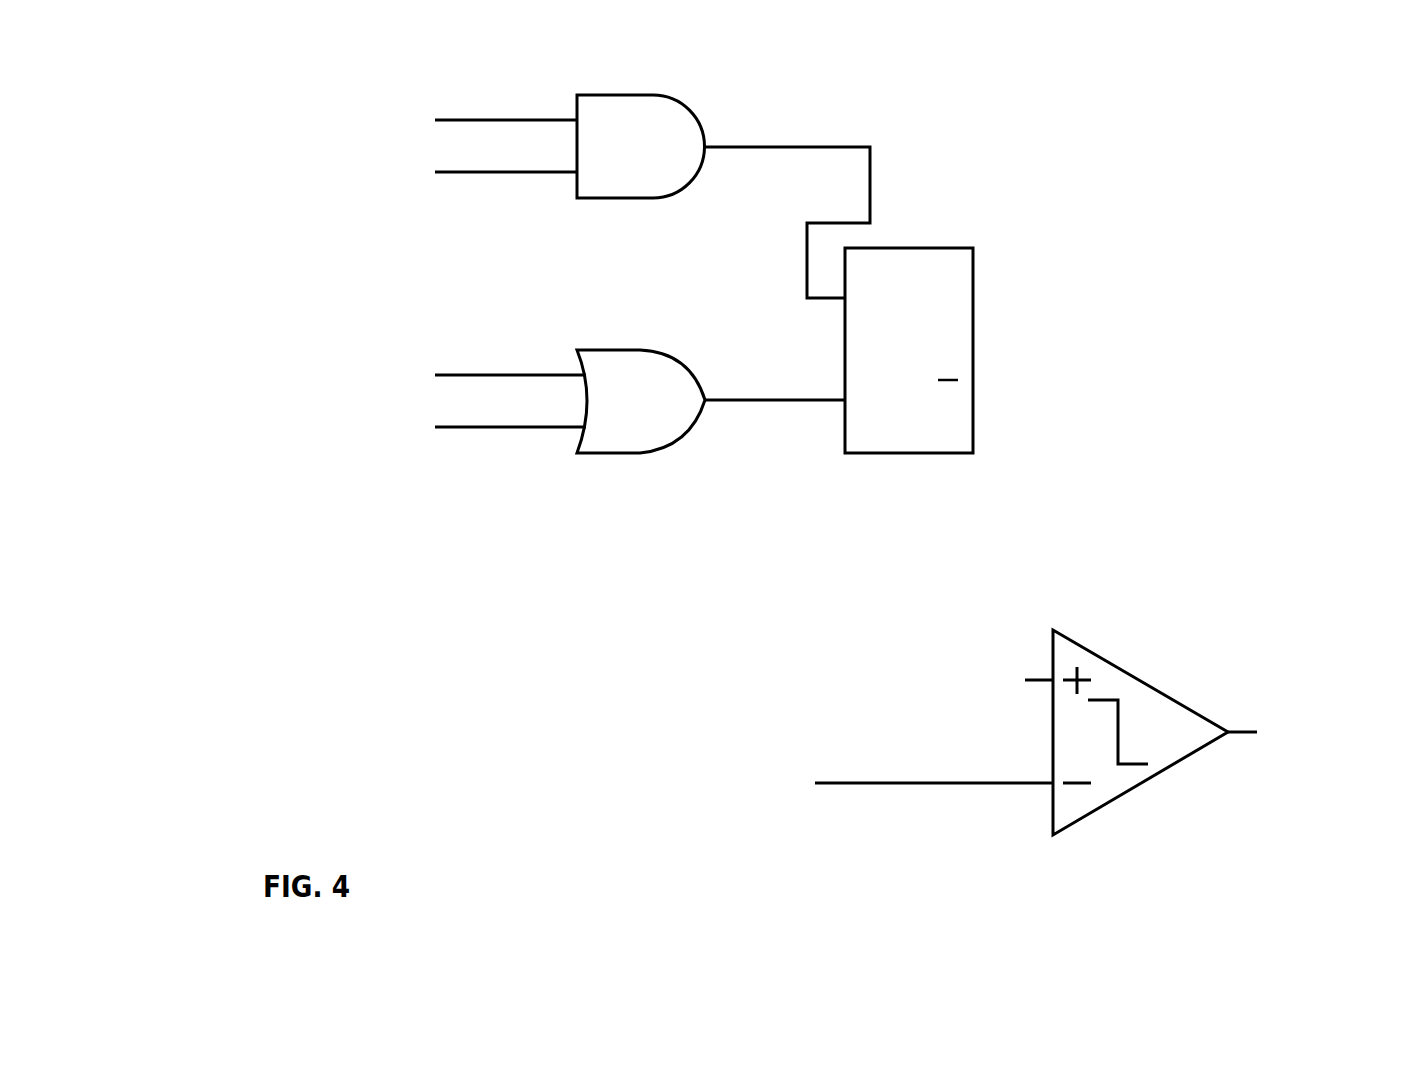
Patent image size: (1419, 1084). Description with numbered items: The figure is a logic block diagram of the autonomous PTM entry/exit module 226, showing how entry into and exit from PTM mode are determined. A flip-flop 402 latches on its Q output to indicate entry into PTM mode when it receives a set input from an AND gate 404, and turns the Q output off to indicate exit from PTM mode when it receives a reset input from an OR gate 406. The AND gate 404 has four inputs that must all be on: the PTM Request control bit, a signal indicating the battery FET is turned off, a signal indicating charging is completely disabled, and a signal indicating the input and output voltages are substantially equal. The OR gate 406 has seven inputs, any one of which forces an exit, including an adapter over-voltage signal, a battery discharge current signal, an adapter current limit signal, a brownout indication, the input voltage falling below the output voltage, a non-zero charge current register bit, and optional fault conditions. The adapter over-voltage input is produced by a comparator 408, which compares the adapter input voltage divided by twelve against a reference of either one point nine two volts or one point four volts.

The autonomous PTM entry/exit module 226 is at (1270, 127).
The flip-flop 402 is at (990, 261).
The AND gate 404 is at (698, 122).
The OR gate 406 is at (623, 347).
The comparator 408 is at (1134, 675).